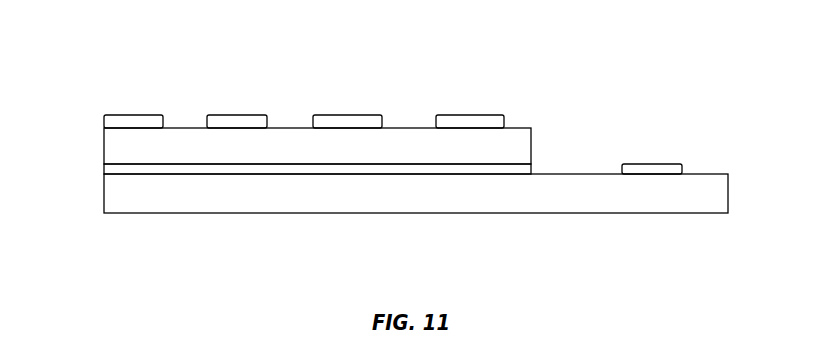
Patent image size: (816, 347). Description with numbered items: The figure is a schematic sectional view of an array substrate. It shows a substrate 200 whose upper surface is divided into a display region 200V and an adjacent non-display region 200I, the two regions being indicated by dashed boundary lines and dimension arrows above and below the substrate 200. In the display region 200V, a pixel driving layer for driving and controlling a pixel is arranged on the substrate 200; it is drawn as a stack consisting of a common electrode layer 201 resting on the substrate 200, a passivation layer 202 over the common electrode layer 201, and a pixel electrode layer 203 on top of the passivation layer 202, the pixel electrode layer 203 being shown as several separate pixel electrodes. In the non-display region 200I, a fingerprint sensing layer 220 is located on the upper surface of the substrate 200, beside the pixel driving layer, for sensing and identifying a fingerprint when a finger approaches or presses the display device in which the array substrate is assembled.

The substrate 200 is at (710, 203).
The common electrode layer 201 is at (117, 170).
The passivation layer 202 is at (117, 144).
The pixel electrode layer 203 is at (125, 120).
The fingerprint sensing layer 220 is at (672, 169).
The display region 200V is at (531, 59).
The non-display region 200I is at (728, 59).